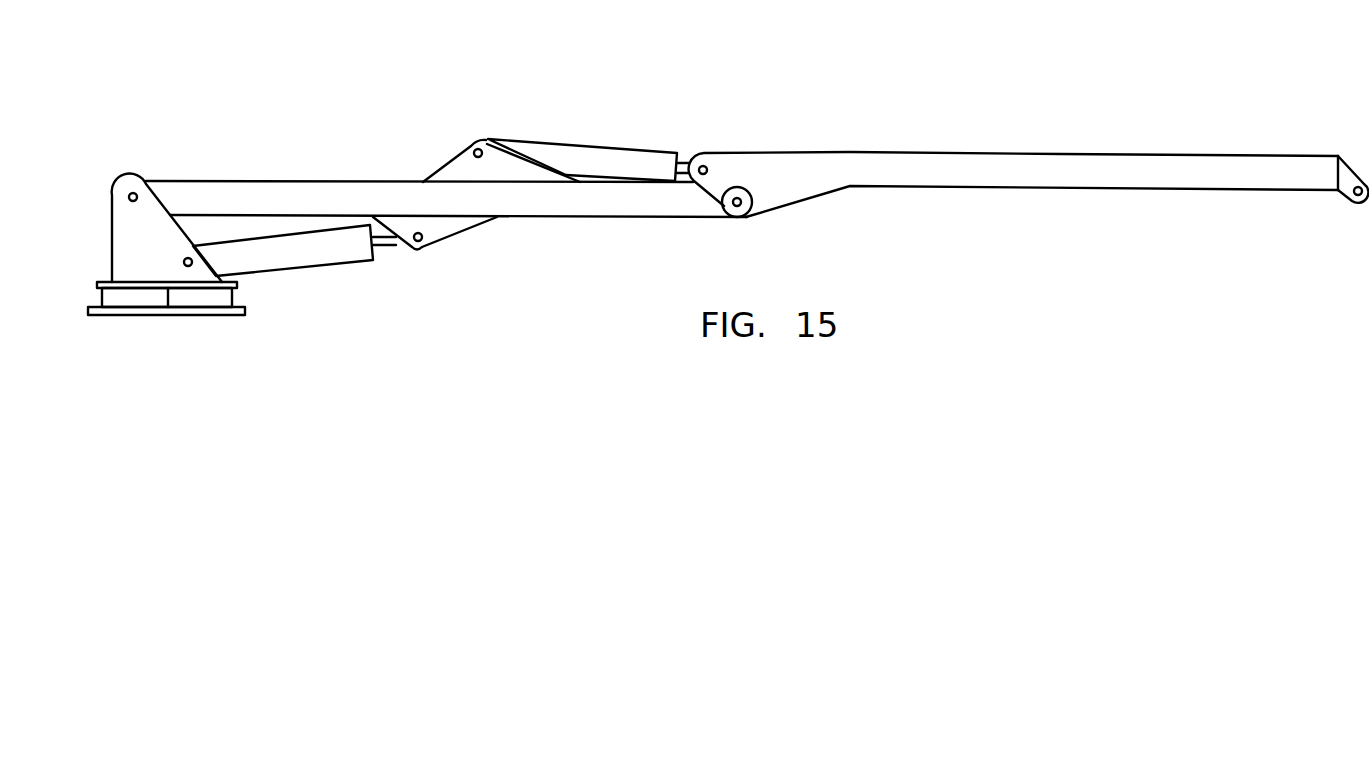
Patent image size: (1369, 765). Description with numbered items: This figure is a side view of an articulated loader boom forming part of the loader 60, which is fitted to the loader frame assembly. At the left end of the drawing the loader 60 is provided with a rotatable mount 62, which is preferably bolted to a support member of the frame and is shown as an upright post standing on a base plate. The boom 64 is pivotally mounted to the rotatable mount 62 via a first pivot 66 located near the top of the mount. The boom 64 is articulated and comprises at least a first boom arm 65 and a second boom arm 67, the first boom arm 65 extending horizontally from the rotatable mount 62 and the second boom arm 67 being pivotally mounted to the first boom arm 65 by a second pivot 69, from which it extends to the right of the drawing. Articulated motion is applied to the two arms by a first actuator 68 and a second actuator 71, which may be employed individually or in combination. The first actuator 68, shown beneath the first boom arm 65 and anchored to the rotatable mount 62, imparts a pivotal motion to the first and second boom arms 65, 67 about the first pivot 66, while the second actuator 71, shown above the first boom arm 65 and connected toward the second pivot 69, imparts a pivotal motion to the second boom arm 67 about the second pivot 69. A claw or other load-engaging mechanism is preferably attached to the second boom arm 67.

The loader 60 is at (682, 96).
The rotatable mount 62 is at (137, 246).
The boom 64 is at (867, 78).
The first boom arm 65 is at (300, 195).
The first pivot 66 is at (135, 194).
The second boom arm 67 is at (1050, 170).
The first actuator 68 is at (298, 252).
The second pivot 69 is at (737, 204).
The second actuator 71 is at (577, 160).